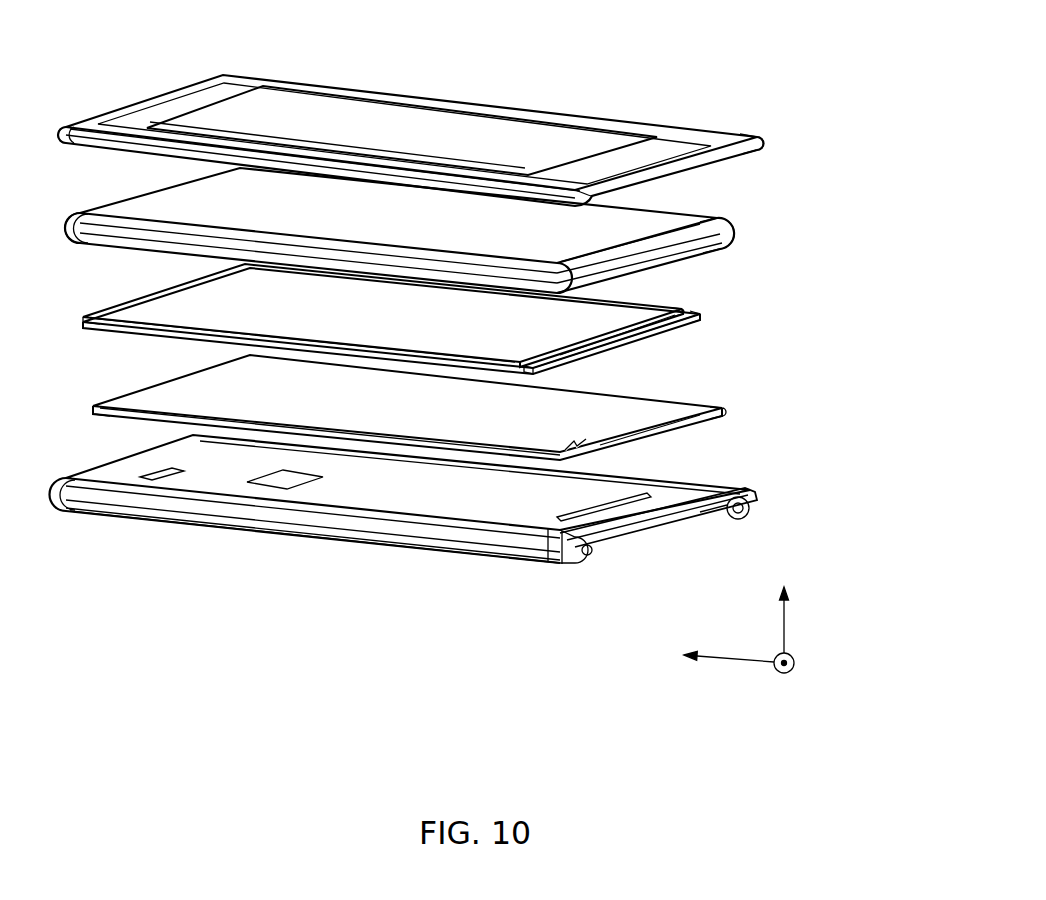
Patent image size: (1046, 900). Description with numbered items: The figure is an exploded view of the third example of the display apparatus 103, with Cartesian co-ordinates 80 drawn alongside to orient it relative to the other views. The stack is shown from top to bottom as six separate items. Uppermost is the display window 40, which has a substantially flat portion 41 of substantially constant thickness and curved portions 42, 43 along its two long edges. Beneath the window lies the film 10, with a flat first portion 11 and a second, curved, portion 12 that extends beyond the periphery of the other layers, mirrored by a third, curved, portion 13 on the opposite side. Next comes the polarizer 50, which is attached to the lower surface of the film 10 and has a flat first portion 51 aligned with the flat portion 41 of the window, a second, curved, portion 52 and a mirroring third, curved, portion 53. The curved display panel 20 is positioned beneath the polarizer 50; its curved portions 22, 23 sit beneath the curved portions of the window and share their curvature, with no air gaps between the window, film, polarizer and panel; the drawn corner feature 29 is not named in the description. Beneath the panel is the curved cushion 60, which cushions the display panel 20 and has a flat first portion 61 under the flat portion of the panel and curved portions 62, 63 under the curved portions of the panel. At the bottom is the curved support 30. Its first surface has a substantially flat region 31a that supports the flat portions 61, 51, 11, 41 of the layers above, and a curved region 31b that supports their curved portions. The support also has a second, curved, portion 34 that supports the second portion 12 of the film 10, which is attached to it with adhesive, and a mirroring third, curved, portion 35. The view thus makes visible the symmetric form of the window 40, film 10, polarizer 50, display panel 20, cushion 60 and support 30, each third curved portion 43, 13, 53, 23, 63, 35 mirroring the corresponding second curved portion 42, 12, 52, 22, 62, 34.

The film 10 is at (452, 229).
The substantially flat first portion of the film 11 is at (652, 220).
The second portion of the film 12 is at (130, 244).
The third curved portion of the film 13 is at (728, 228).
The display panel 20 is at (463, 329).
The second curved portion of the display panel 22 is at (548, 362).
The third curved portion of the display panel 23 is at (697, 326).
The corner of support plate 29 is at (535, 378).
The curved support 30 is at (455, 524).
The substantially flat region of the first portion of the support 31a is at (583, 500).
The curved region of the first portion of the support 31b is at (535, 537).
The second curved portion of the support 34 is at (430, 553).
The third curved portion of the support 35 is at (693, 487).
The display window 40 is at (466, 129).
The substantially flat portion of the display window 41 is at (450, 132).
The curved portion of the display window 42 is at (125, 140).
The third curved portion of the display window 43 is at (744, 132).
The polarizer 50 is at (402, 316).
The first portion of the polarizer 51 is at (626, 314).
The second curved portion of the polarizer 52 is at (150, 333).
The third curved portion of the polarizer 53 is at (668, 307).
The cushion 60 is at (448, 408).
The first portion of the cushion 61 is at (650, 412).
The second curved portion of the cushion 62 is at (107, 418).
The third curved portion of the cushion 63 is at (705, 398).
The Cartesian co-ordinates 80 is at (748, 712).
The third example of the display apparatus 103 is at (312, 640).